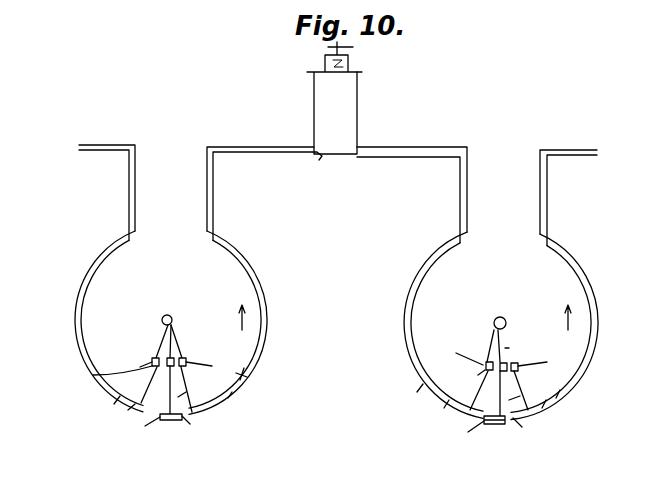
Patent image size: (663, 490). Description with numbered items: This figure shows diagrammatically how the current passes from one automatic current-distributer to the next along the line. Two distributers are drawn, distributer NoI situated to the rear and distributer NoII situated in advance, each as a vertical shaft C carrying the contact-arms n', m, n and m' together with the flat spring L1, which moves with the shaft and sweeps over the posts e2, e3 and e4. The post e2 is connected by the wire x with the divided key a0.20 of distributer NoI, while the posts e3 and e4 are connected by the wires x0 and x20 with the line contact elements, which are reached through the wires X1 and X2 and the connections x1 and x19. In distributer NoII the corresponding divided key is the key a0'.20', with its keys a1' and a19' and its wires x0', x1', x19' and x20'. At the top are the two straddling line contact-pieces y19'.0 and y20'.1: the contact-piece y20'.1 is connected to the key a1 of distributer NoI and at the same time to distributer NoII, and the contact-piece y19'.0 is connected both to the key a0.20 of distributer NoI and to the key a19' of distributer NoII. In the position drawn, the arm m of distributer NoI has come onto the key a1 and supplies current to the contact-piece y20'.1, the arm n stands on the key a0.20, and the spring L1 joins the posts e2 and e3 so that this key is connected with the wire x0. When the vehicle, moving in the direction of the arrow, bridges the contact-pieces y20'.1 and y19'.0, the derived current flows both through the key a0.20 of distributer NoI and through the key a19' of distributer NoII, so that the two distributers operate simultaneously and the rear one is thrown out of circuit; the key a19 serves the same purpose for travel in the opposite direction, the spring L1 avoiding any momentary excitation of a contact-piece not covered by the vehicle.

The contact-piece 19' to 0 y19'.0 is at (313, 98).
The contact-piece 20' to 1 y20'.1 is at (378, 83).
The wire to contact element 20 to 1 X2 is at (157, 192).
The wire to contact element 19 to 0 X1 is at (568, 198).
The wire of distributer No. II x19' is at (260, 259).
The wire of distributer No. II x20' is at (267, 282).
The wire x1 is at (412, 269).
The wire x0 is at (408, 290).
The distributer No. II NoII is at (171, 322).
The distributer No. I NoI is at (501, 325).
The vertical shaft C is at (342, 317).
The contact-arm n' is at (155, 345).
The contact-arm m is at (336, 348).
The contact-arm n is at (344, 348).
The contact-arm m' is at (480, 346).
The key a1' is at (132, 364).
The key a19' is at (211, 360).
The key a0' to a20' a0'.20' is at (93, 380).
The wire x is at (334, 389).
The flat spring L1 is at (332, 404).
The post e2 is at (348, 399).
The post e3 is at (310, 431).
The post e4 is at (355, 425).
The wire of distributer No. II x1' is at (102, 395).
The wire of distributer No. II x0' is at (119, 415).
The key a1 is at (457, 354).
The key a0 to a20 a0.20 is at (461, 376).
The key a19 is at (542, 362).
The wire x19 is at (570, 399).
The wire x20 is at (554, 413).